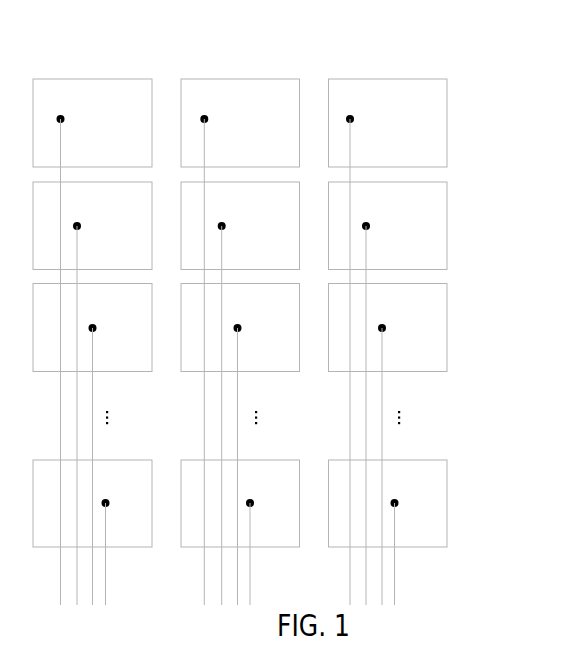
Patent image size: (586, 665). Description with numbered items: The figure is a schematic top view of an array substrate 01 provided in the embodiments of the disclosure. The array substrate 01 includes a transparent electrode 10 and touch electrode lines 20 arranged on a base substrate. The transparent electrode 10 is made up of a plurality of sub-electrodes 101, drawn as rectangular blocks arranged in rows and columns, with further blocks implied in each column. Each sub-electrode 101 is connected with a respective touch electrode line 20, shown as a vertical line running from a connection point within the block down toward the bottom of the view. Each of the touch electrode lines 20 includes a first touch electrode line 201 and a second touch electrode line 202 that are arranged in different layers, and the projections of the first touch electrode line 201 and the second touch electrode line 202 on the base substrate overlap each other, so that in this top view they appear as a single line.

The array substrate 01 is at (133, 37).
The transparent electrode 10 is at (506, 82).
The sub-electrode 101 is at (432, 502).
The touch electrode line 20 is at (396, 589).
The first touch electrode line 201 is at (222, 362).
The second touch electrode line 202 is at (236, 415).